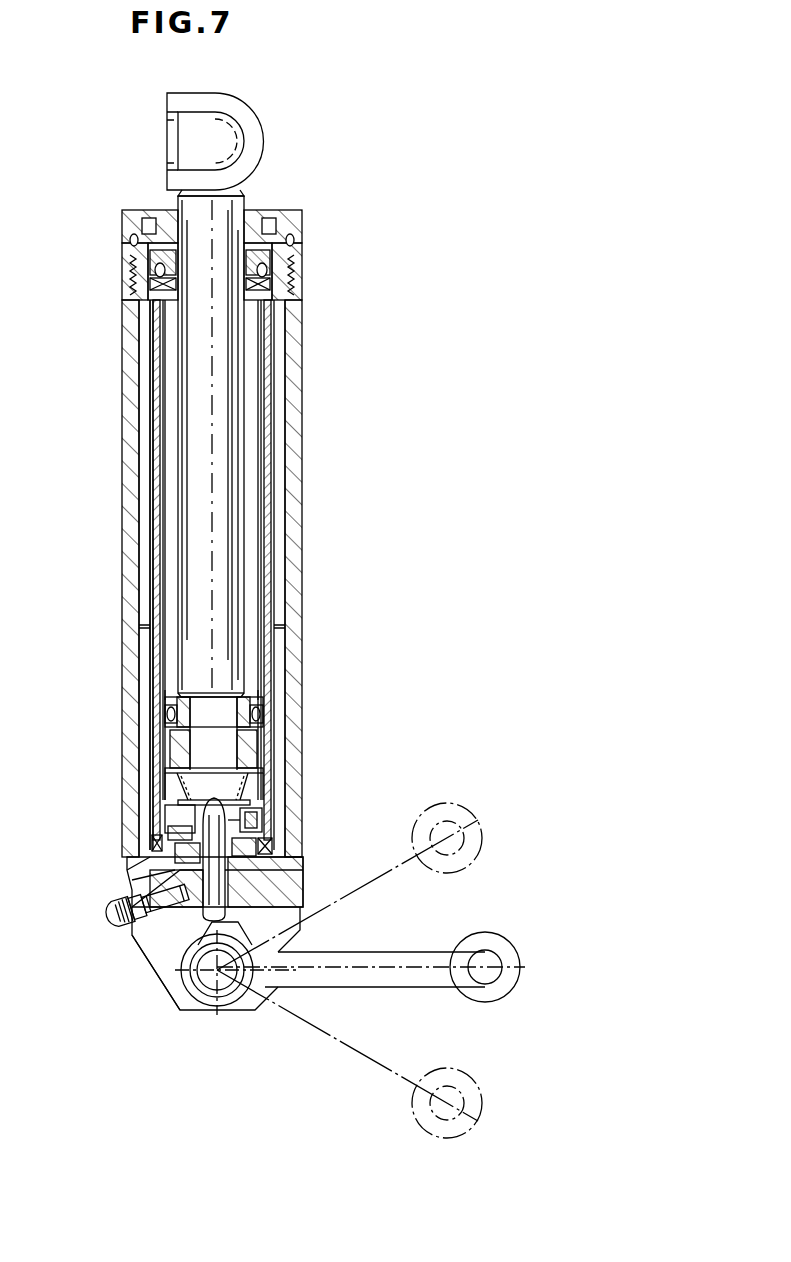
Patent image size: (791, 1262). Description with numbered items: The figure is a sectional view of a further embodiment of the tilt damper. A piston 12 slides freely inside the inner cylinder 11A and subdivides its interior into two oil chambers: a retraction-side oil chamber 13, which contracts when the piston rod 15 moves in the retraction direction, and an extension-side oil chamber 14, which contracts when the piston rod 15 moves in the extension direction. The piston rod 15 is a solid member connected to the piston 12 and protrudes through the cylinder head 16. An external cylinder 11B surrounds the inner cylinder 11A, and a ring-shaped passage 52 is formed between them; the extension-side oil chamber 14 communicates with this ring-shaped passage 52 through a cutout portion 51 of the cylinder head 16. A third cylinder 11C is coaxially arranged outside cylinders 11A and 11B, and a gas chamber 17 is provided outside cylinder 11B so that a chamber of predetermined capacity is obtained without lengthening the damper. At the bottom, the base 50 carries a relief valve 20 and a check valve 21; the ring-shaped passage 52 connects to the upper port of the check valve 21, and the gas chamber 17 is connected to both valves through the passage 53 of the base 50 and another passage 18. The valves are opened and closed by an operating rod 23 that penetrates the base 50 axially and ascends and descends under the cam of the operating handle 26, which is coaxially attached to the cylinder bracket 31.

The piston rod 15 is at (230, 213).
The cylinder head 16 is at (288, 245).
The cutout portion 51 is at (282, 292).
The ring-shaped passage 52 is at (150, 428).
The gas chamber 17 is at (282, 428).
The inner cylinder 11A is at (265, 578).
The external cylinder 11B is at (276, 590).
The cylinder 11C is at (300, 622).
The extension-side oil chamber 14 is at (257, 665).
The piston 12 is at (260, 700).
The retraction-side oil chamber 13 is at (258, 750).
The relief valve 20 is at (187, 788).
The check valve 21 is at (262, 812).
The passage 18 is at (173, 842).
The base 50 is at (262, 858).
The passage 53 is at (272, 880).
The operating rod 23 is at (190, 908).
The cylinder bracket 31 is at (170, 982).
The operating handle 26 is at (300, 975).